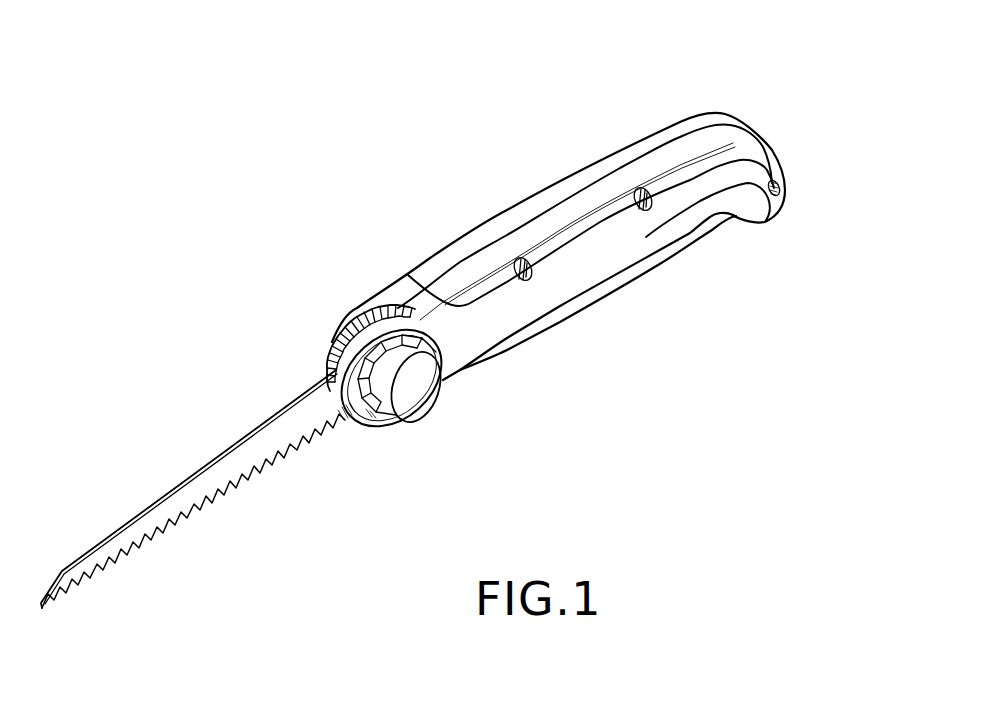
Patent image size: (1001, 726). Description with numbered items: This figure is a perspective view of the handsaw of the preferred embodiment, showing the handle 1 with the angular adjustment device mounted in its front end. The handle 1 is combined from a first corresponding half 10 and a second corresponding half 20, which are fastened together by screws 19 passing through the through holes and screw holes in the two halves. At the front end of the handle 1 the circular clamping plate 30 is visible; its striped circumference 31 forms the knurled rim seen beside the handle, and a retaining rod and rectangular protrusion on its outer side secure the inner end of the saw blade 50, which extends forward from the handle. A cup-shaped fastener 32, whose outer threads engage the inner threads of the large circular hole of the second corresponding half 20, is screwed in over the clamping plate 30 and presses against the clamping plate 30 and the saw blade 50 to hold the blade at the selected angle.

The handle 1 is at (784, 104).
The first corresponding half 10 is at (599, 162).
The screw 19 is at (647, 212).
The second corresponding half 20 is at (778, 161).
The circular clamping plate 30 is at (430, 432).
The knurled ring 31 is at (352, 325).
The cup-shaped fastener 32 is at (428, 399).
The saw blade 50 is at (253, 457).